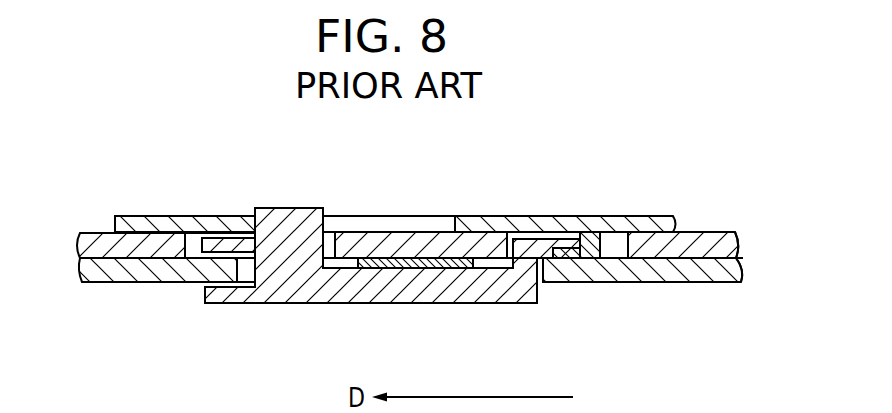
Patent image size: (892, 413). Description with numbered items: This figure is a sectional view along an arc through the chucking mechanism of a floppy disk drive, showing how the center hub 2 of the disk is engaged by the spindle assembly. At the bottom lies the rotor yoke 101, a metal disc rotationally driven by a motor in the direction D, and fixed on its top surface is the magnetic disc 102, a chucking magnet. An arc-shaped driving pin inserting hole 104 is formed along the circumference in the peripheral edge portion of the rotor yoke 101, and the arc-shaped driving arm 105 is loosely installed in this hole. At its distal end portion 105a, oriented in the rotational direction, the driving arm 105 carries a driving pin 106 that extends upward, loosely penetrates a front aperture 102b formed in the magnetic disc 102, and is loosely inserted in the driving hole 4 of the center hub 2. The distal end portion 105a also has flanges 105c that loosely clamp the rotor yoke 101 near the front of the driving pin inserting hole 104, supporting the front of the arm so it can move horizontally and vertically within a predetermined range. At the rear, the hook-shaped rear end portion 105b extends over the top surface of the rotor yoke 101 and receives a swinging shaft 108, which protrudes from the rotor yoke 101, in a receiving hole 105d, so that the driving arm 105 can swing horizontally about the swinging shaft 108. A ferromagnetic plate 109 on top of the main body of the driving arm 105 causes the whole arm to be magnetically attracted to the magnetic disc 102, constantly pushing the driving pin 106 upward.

The center hub 2 is at (144, 216).
The driving hole 4 is at (413, 216).
The rotor yoke 101 is at (106, 283).
The magnetic disc 102 is at (89, 233).
The front aperture 102b is at (196, 240).
The driving pin inserting hole 104 is at (244, 275).
The driving arm 105 is at (300, 292).
The distal end portion 105a is at (275, 304).
The rear end portion 105b is at (591, 237).
The flanges 105c is at (224, 238).
The receiving hole 105d is at (556, 245).
The driving pin 106 is at (294, 208).
The swinging shaft 108 is at (563, 266).
The ferromagnetic plate 109 is at (408, 263).